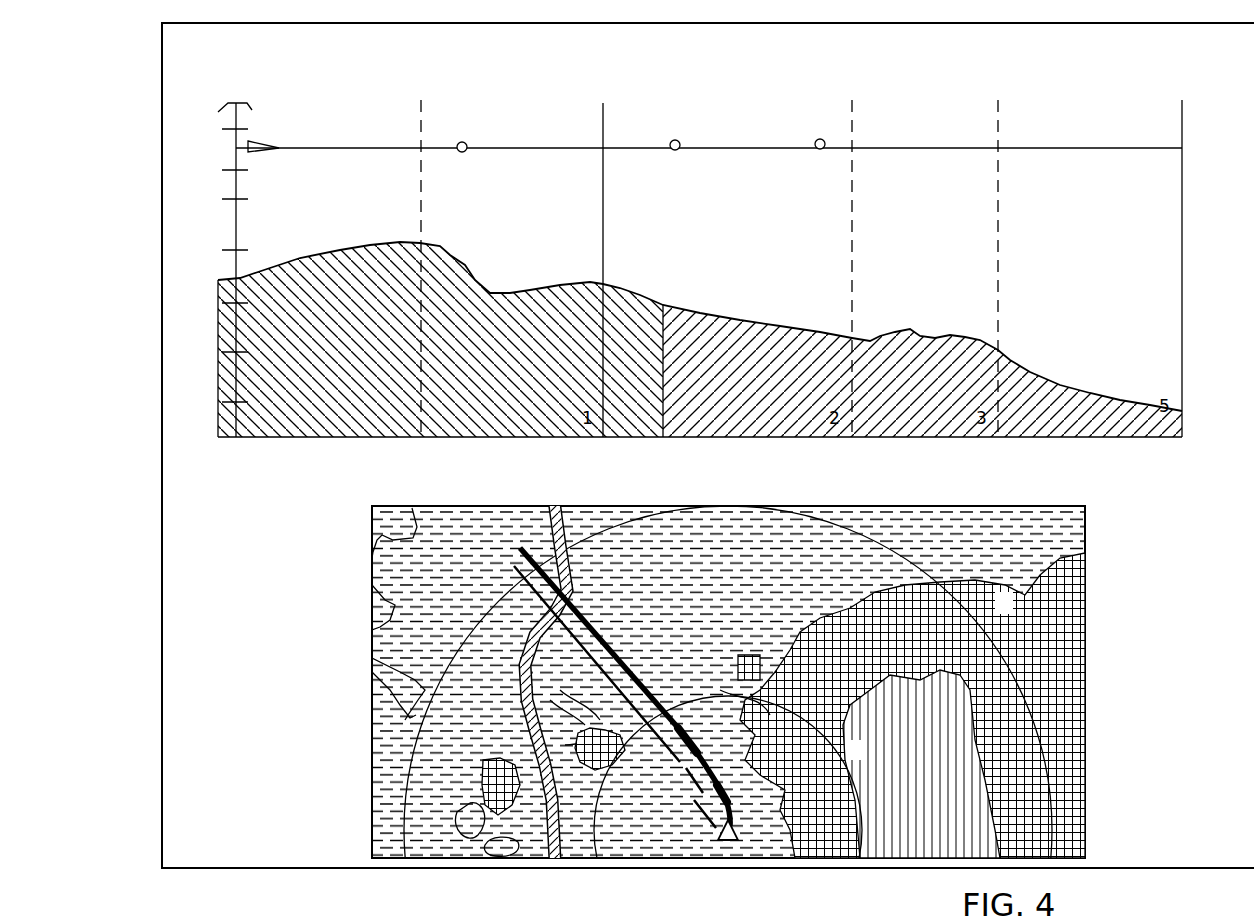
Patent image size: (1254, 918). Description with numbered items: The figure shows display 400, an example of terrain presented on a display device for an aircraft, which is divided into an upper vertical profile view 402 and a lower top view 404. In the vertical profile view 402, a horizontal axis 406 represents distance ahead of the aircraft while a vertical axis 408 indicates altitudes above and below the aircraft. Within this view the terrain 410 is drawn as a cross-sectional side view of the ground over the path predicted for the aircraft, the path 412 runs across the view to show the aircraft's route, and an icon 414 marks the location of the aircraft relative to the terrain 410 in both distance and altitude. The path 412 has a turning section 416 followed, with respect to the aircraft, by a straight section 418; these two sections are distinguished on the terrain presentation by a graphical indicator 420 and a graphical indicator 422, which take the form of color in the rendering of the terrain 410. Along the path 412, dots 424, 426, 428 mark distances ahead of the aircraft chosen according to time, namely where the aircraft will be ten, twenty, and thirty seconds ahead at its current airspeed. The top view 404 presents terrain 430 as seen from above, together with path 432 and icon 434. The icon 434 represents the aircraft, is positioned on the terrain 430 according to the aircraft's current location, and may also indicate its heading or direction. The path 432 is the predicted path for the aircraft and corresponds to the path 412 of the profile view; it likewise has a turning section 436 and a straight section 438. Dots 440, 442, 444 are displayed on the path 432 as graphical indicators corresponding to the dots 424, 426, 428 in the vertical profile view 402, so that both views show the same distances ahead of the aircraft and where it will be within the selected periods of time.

The display 400 is at (124, 295).
The vertical profile view 402 is at (1184, 412).
The top view 404 is at (1088, 598).
The horizontal axis 406 is at (335, 442).
The vertical axis 408 is at (258, 113).
The terrain 410 is at (635, 310).
The path 412 is at (380, 147).
The icon 414 is at (265, 153).
The turning section 416 is at (537, 290).
The straight section 418 is at (755, 326).
The graphical indicator 420 is at (488, 417).
The graphical indicator 422 is at (915, 415).
The dot 424 is at (462, 142).
The dot 426 is at (675, 140).
The dot 428 is at (820, 139).
The terrain 430 is at (366, 648).
The path 432 is at (634, 655).
The icon 434 is at (730, 842).
The turning section 436 is at (702, 809).
The straight section 438 is at (605, 675).
The dot 440 is at (735, 766).
The dot 442 is at (712, 750).
The dot 444 is at (740, 692).